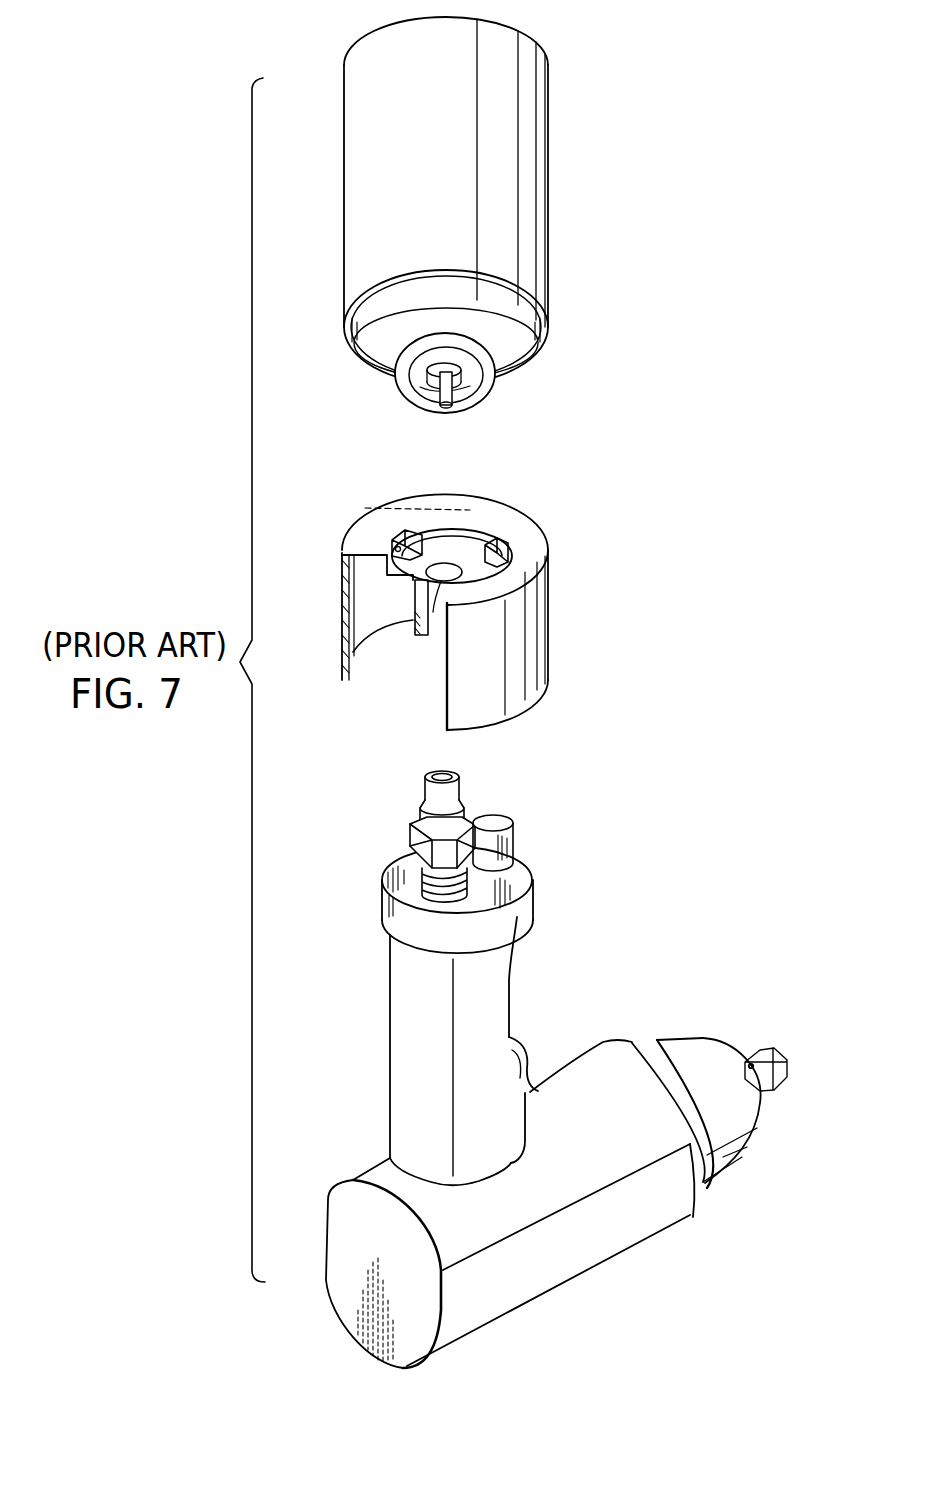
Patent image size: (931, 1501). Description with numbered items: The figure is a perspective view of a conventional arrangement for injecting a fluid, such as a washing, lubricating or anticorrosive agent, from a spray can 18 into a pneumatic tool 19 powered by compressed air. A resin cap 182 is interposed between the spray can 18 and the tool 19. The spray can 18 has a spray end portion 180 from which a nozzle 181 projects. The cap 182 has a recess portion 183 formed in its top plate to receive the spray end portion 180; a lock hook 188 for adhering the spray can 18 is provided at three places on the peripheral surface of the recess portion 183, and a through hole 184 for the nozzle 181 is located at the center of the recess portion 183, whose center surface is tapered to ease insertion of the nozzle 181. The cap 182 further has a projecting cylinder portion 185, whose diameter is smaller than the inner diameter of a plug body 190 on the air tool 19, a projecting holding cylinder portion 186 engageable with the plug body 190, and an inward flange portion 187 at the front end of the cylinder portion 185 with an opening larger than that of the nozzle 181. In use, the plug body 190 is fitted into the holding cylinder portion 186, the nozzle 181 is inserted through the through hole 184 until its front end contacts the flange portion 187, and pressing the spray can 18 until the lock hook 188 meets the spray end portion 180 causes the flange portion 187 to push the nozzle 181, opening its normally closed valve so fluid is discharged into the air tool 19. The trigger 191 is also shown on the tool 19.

The spray can 18 is at (471, 225).
The spray end portion 180 is at (484, 393).
The nozzle 181 is at (432, 398).
The resin cap 182 is at (447, 592).
The recess portion 183 is at (462, 557).
The through hole 184 is at (443, 562).
The cylinder portion 185 is at (397, 577).
The holding cylinder portion 186 is at (377, 629).
The inward flange portion 187 is at (428, 637).
The lock hook 188 is at (402, 533).
The pneumatic tool 19 is at (556, 1067).
The plug body 190 is at (460, 794).
The trigger 191 is at (527, 1043).